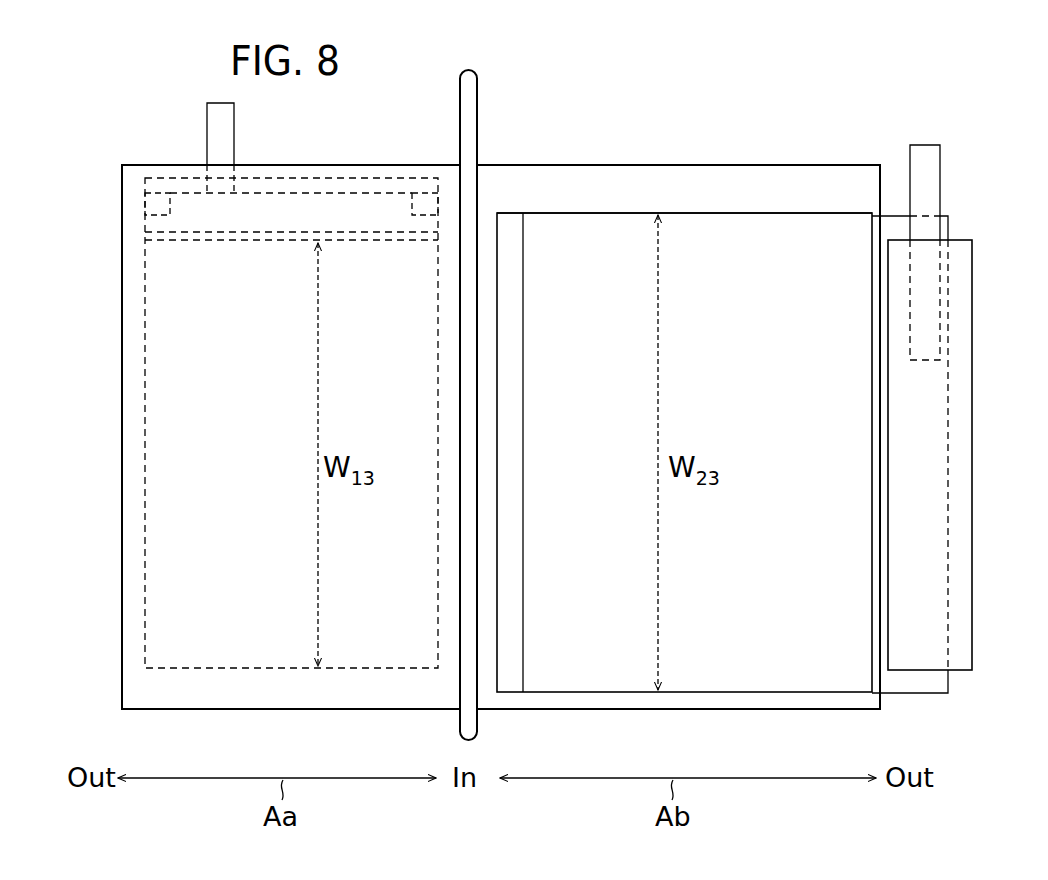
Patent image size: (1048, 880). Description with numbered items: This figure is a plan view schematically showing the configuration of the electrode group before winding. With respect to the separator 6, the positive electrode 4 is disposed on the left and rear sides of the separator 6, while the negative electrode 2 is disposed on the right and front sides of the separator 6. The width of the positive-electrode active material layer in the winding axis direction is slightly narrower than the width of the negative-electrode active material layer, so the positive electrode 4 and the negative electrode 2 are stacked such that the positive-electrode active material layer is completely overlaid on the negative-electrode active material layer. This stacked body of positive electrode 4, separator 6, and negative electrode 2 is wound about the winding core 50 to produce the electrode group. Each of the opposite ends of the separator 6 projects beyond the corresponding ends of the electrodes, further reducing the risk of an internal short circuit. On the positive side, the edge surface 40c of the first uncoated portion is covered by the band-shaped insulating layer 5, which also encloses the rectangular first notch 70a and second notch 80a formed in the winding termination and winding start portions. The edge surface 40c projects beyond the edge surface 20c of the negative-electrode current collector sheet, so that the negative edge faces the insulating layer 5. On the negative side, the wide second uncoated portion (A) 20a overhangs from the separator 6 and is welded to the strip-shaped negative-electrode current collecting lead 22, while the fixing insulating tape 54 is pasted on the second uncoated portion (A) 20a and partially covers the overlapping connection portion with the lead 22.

The negative electrode 2 is at (735, 670).
The positive electrode 4 is at (160, 452).
The insulating layer 5 is at (150, 227).
The separator 6 is at (724, 189).
The second uncoated portion (A) 20a is at (916, 688).
The edge surface 20c is at (598, 210).
The negative-electrode current collecting lead 22 is at (927, 175).
The edge surface 40c is at (276, 190).
The winding core 50 is at (473, 88).
The fixing insulating tape 54 is at (957, 430).
The first notch 70a is at (158, 202).
The second notch 80a is at (426, 190).